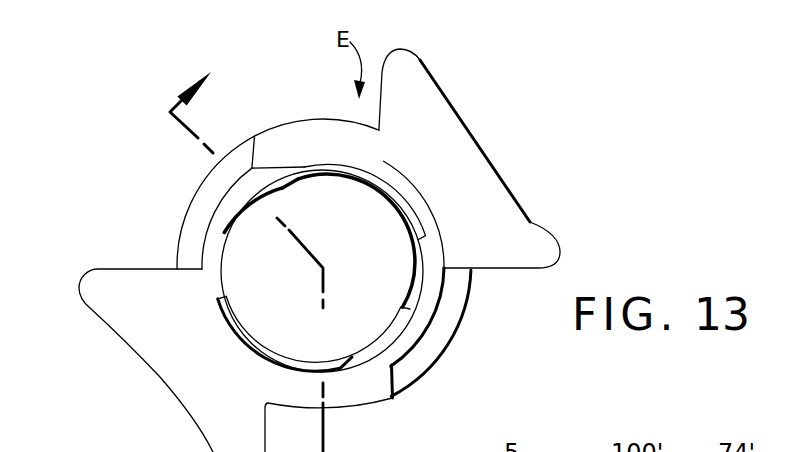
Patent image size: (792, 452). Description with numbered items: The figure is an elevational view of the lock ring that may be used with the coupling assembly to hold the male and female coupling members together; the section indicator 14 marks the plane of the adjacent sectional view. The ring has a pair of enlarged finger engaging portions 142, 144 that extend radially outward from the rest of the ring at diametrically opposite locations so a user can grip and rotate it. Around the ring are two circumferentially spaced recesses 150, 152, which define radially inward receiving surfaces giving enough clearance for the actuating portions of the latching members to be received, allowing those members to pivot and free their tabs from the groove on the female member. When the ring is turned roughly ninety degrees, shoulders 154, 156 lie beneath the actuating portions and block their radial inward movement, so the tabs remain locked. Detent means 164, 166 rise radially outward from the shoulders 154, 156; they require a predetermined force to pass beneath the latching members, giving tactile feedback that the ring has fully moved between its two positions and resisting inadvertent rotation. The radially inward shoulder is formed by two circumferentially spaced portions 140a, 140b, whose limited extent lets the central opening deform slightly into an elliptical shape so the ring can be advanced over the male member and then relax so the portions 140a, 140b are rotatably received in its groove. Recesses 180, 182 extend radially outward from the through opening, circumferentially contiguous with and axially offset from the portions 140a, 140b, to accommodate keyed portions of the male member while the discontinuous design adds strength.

The section line / viewing direction arrow 14 is at (212, 98).
The circumferentially spaced portion of shoulder 140a is at (283, 190).
The circumferentially spaced portion of shoulder 140b is at (373, 342).
The finger engaging portion 142 is at (175, 367).
The finger engaging portion 144 is at (480, 200).
The recess 150 is at (190, 231).
The recess 152 is at (460, 326).
The shoulder 154 is at (297, 123).
The shoulder 156 is at (343, 412).
The detent means 164 is at (252, 135).
The detent means 166 is at (394, 399).
The recess 180 is at (388, 182).
The recess 182 is at (255, 343).